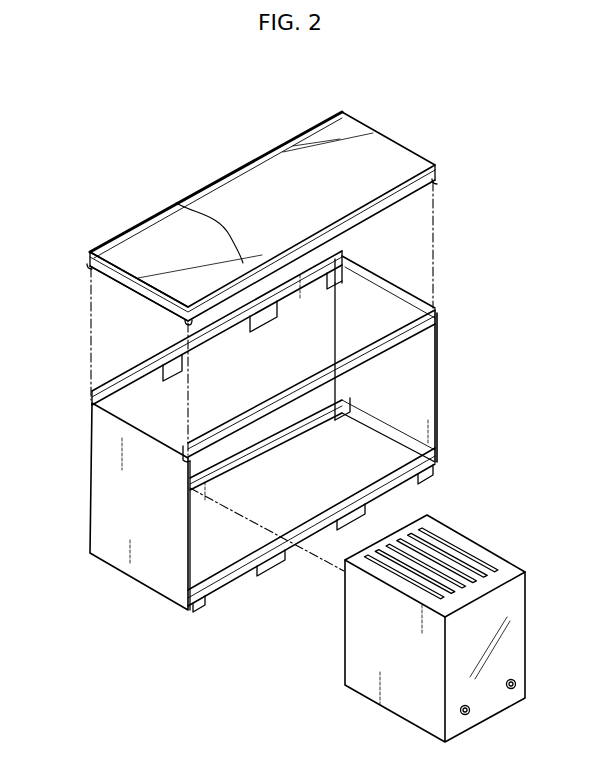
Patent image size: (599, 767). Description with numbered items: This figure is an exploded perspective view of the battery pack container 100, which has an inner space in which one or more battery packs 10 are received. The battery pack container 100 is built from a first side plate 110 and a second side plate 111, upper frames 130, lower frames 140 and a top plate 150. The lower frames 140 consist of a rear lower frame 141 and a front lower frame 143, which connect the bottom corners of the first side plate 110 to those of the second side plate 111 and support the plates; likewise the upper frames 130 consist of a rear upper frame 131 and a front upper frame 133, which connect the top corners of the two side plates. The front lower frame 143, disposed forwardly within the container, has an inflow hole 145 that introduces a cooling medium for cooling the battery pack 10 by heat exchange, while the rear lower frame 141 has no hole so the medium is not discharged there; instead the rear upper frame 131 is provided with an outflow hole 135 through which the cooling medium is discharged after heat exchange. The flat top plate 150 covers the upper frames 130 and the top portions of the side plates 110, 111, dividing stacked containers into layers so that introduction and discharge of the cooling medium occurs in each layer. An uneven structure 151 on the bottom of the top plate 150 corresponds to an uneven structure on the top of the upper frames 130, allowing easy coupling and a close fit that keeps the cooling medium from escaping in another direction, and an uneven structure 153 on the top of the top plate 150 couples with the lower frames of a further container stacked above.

The battery pack container 100 is at (429, 100).
The top plate 150 is at (253, 194).
The uneven structure 153 is at (158, 215).
The uneven structure 151 is at (183, 318).
The upper frames 130 is at (492, 222).
The rear upper frame 131 is at (347, 262).
The front upper frame 133 is at (435, 308).
The outflow hole 135 is at (140, 392).
The second side plate 111 is at (441, 366).
The first side plate 110 is at (86, 462).
The lower frames 140 is at (492, 418).
The rear lower frame 141 is at (350, 403).
The front lower frame 143 is at (437, 463).
The inflow hole 145 is at (227, 585).
The battery pack 10 is at (512, 558).